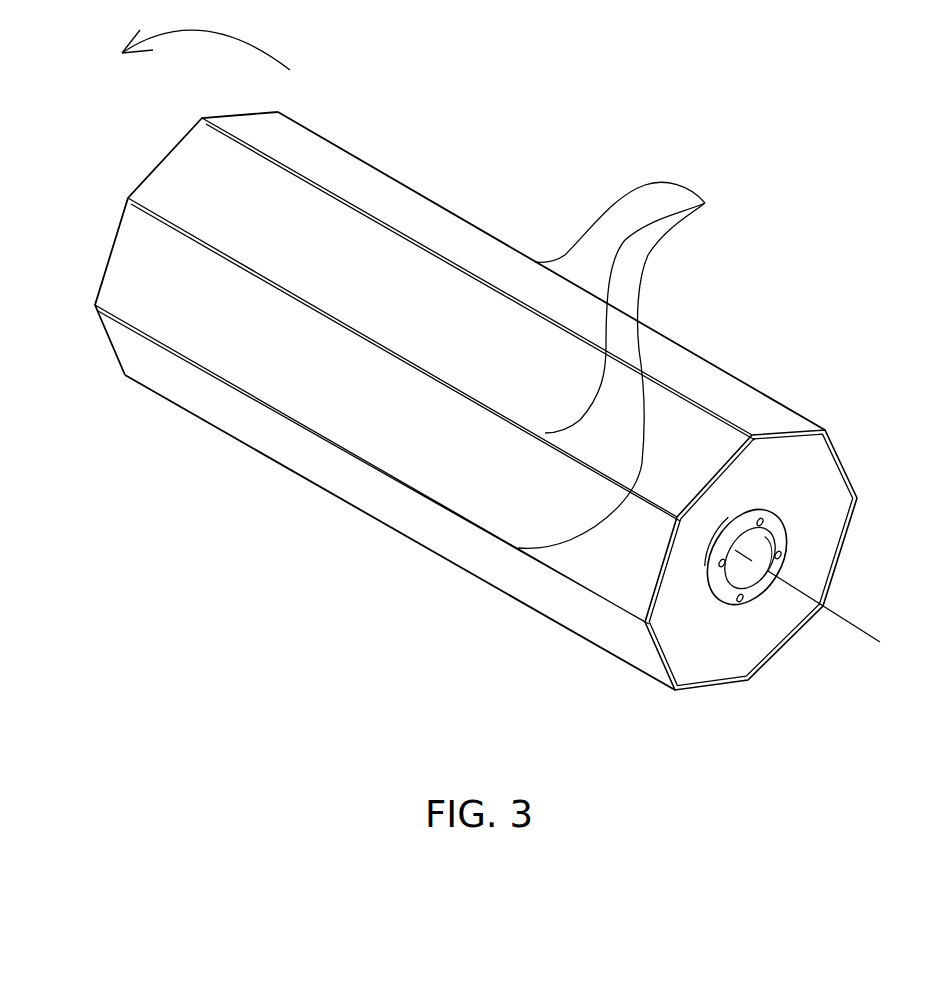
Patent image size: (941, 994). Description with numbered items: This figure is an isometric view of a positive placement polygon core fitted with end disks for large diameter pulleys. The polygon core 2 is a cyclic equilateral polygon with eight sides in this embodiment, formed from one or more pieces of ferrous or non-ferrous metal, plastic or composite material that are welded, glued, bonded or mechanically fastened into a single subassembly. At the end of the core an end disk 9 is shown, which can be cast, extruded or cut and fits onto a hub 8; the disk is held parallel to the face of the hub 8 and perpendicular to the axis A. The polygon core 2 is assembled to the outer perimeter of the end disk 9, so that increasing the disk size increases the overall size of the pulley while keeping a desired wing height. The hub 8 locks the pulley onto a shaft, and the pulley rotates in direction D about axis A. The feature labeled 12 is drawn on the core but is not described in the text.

The polygon core 2 is at (208, 160).
The hub 8 is at (782, 530).
The end disk 9 is at (730, 645).
The strip region 12 is at (628, 365).
The axis A is at (822, 596).
The rotation direction D is at (200, 50).